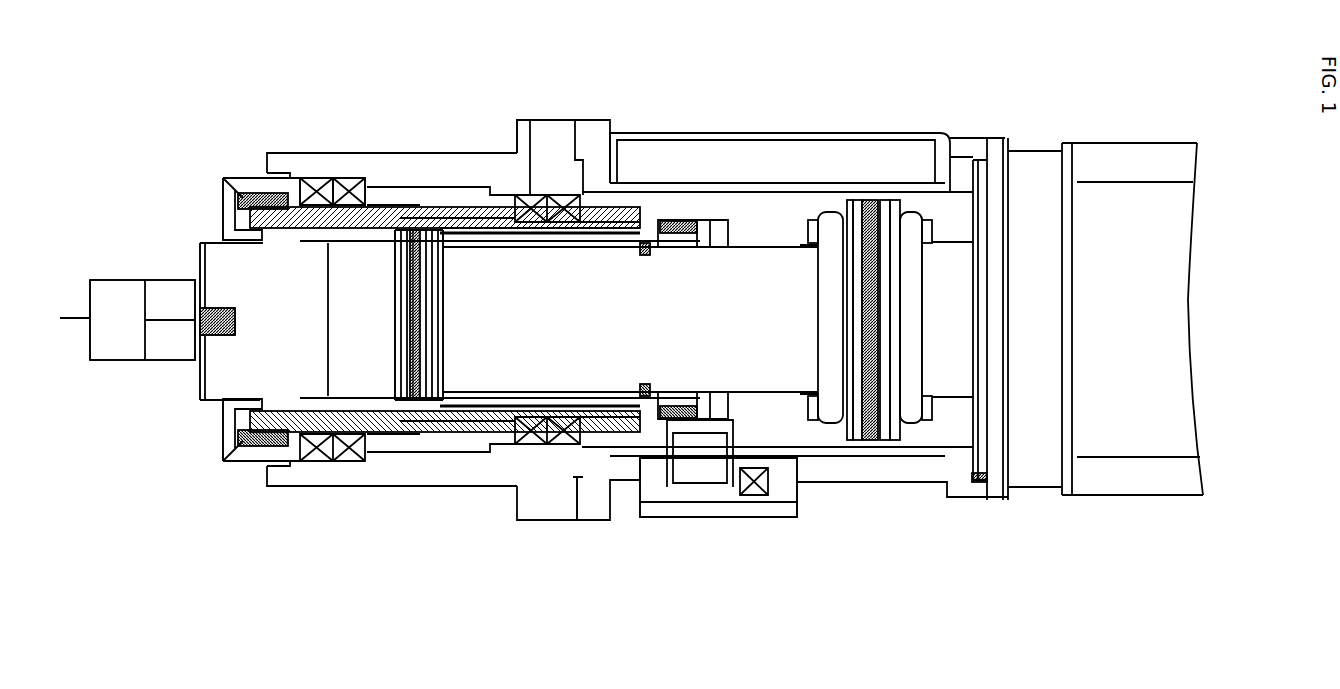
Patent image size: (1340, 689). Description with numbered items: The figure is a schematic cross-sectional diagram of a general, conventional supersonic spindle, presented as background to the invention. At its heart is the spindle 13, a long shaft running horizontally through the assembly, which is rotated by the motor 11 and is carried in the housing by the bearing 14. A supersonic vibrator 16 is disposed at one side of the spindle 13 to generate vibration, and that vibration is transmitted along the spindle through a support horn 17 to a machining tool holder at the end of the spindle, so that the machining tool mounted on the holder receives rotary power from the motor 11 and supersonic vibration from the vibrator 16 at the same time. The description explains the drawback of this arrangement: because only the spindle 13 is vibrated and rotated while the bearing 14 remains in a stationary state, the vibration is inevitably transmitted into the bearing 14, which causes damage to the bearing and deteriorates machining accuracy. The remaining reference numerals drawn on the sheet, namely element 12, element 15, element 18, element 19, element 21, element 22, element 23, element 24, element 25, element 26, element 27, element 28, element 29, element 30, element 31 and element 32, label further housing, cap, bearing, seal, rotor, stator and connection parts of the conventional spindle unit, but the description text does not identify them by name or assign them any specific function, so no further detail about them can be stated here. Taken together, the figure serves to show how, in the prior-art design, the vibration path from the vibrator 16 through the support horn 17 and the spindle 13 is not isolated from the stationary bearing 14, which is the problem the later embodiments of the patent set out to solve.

The motor 11 is at (1140, 422).
The spindle shaft 12 is at (237, 270).
The spindle 13 is at (247, 175).
The bearing 14 is at (535, 195).
The rear housing 15 is at (828, 482).
The supersonic vibrator 16 is at (245, 463).
The support horn 17 is at (222, 245).
The end flange 18 is at (72, 320).
The end cap unit 19 is at (168, 350).
The lower front bearing 21 is at (337, 487).
The front bearing 22 is at (297, 203).
The front bearing 23 is at (328, 178).
The bearing spacer 24 is at (358, 205).
The bearing sleeve 25 is at (403, 186).
The stator 26 is at (441, 200).
The rotor core 27 is at (395, 430).
The rotor magnet 28 is at (413, 432).
The rotor sleeve 29 is at (432, 432).
The coolant pipe 30 is at (598, 433).
The connection box 31 is at (708, 453).
The rear bearing ring 32 is at (908, 445).